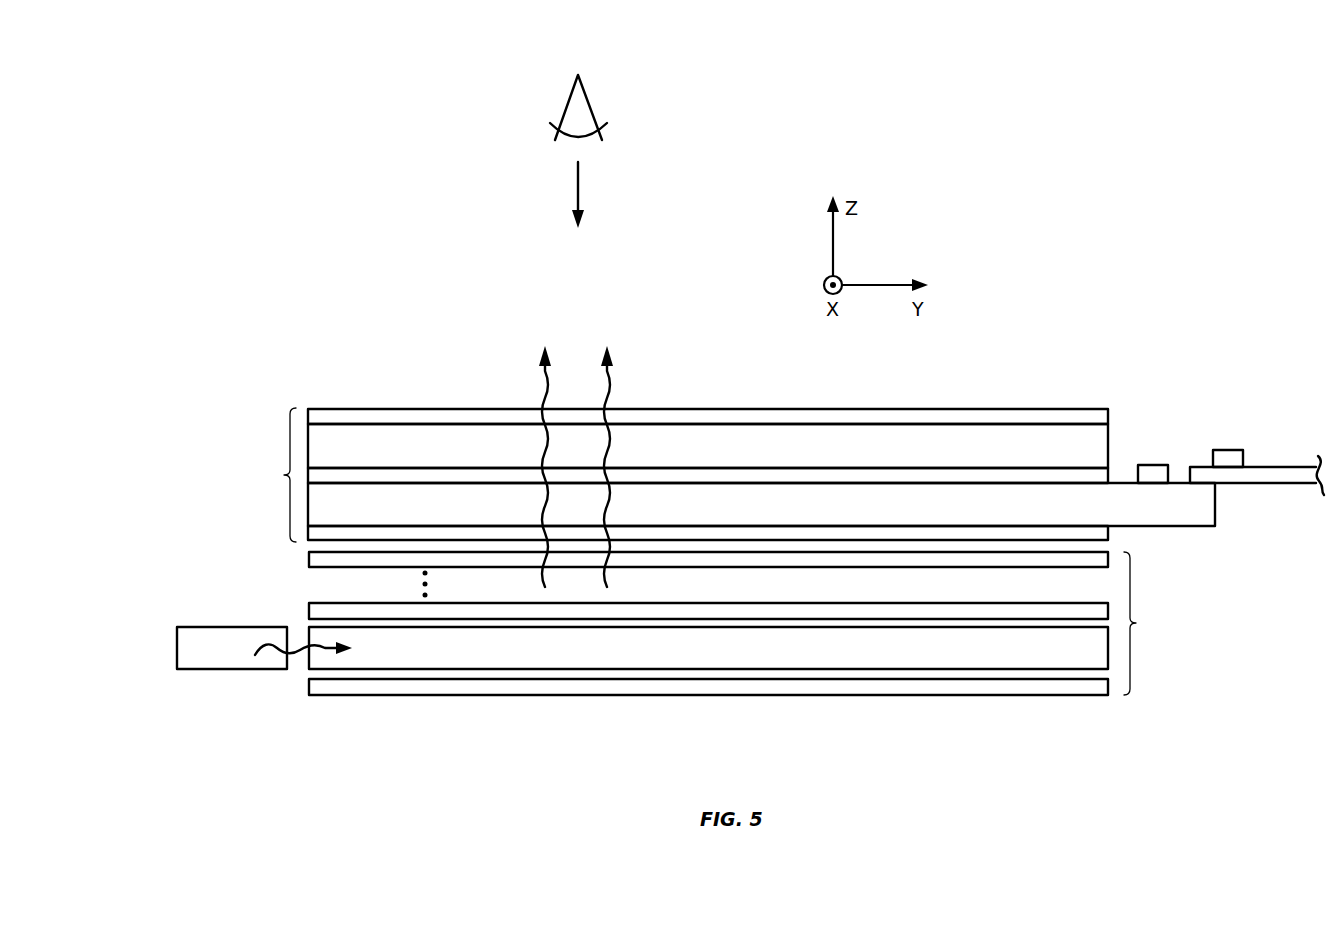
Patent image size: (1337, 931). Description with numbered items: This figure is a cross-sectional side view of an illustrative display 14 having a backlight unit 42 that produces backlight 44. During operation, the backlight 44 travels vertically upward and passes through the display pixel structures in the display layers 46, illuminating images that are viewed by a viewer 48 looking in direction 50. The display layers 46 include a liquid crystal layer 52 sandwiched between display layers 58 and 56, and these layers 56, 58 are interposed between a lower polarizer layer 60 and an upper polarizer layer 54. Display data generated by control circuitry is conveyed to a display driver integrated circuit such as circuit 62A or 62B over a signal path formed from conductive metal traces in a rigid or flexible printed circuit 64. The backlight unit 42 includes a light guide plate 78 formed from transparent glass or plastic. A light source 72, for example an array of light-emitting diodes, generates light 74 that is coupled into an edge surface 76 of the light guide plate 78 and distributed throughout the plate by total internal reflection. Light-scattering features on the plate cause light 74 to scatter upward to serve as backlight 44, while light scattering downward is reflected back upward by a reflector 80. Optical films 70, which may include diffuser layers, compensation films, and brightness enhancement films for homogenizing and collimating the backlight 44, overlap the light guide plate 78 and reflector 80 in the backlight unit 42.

The display 14 is at (1116, 226).
The backlight unit 42 is at (708, 652).
The backlight 44 is at (608, 371).
The display layers 46 is at (735, 447).
The viewer 48 is at (590, 103).
The direction 50 is at (580, 193).
The liquid crystal layer 52 is at (387, 473).
The upper polarizer layer 54 is at (323, 417).
The display layer 56 is at (352, 443).
The display layer 58 is at (423, 502).
The lower polarizer layer 60 is at (458, 533).
The display driver integrated circuit 62A is at (1150, 464).
The display driver integrated circuit 62B is at (1232, 449).
The printed circuit 64 is at (1271, 483).
The optical films 70 is at (318, 610).
The light source 72 is at (177, 649).
The light 74 is at (270, 653).
The edge surface 76 is at (307, 662).
The light guide plate 78 is at (418, 660).
The reflector 80 is at (505, 690).